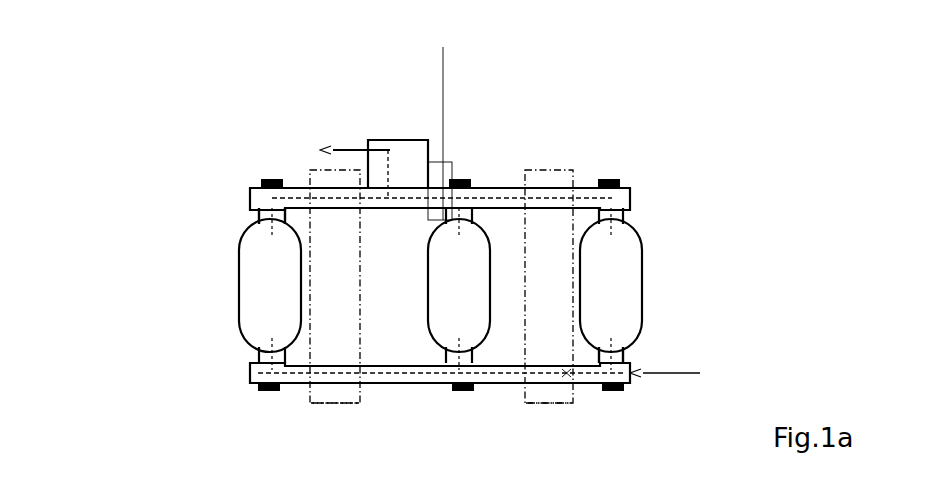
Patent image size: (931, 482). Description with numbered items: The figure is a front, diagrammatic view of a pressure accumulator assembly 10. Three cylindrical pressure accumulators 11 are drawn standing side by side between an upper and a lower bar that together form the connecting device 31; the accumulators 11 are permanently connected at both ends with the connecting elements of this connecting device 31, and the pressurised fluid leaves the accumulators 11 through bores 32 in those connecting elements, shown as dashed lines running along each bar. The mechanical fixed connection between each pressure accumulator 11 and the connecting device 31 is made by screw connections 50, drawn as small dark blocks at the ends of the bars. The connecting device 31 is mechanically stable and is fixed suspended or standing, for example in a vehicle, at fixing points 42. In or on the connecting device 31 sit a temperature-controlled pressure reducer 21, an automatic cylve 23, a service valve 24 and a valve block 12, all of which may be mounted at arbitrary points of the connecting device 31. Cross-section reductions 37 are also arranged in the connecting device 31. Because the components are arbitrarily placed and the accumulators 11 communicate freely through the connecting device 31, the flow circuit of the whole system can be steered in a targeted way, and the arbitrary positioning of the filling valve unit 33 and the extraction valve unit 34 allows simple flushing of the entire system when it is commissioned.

The pressure accumulator assembly 10 is at (158, 384).
The pressure accumulator 11 is at (440, 289).
The valve block 12 is at (376, 130).
The temperature-controlled pressure reducer 21 is at (572, 180).
The automatic cylinder valve 23 is at (262, 365).
The service valve 24 is at (416, 186).
The connecting device 31 is at (516, 180).
The bore 32 is at (486, 190).
The filling valve unit 33 is at (689, 377).
The extraction valve unit 34 is at (337, 128).
The cross-section reduction 37 is at (525, 442).
The fixing point 42 is at (352, 412).
The screw connection 50 is at (273, 168).